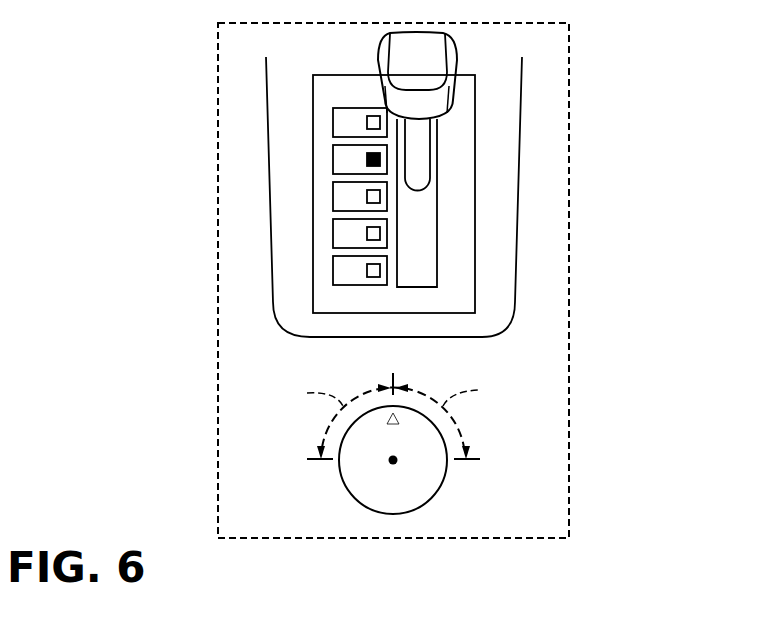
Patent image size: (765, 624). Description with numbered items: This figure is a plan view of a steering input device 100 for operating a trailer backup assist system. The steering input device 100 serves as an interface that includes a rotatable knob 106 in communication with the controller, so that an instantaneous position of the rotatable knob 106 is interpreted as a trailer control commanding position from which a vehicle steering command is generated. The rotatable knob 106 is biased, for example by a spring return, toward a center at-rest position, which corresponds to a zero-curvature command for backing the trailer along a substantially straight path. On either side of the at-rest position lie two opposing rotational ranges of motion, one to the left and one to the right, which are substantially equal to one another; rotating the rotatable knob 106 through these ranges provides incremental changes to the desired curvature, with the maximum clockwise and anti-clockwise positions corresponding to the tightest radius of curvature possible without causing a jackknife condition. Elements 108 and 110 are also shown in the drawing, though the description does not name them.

The steering input device 100 is at (593, 378).
The rotatable knob 106 is at (428, 471).
The rotation indicator with positions P(AR), R(L), R(R) 108 is at (282, 367).
The gear shifter assembly with PRNDL indicator 110 is at (500, 252).